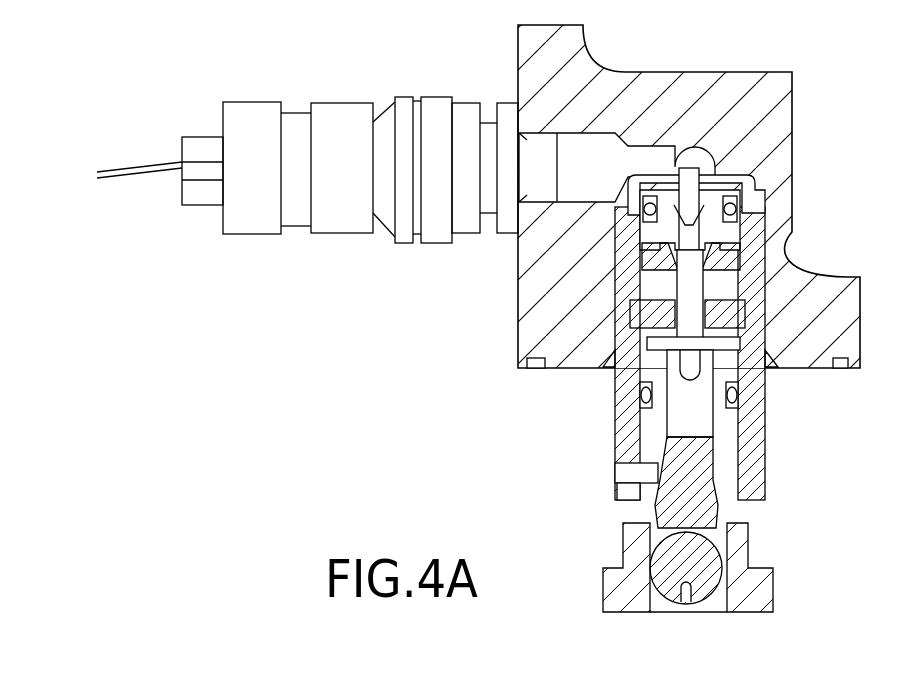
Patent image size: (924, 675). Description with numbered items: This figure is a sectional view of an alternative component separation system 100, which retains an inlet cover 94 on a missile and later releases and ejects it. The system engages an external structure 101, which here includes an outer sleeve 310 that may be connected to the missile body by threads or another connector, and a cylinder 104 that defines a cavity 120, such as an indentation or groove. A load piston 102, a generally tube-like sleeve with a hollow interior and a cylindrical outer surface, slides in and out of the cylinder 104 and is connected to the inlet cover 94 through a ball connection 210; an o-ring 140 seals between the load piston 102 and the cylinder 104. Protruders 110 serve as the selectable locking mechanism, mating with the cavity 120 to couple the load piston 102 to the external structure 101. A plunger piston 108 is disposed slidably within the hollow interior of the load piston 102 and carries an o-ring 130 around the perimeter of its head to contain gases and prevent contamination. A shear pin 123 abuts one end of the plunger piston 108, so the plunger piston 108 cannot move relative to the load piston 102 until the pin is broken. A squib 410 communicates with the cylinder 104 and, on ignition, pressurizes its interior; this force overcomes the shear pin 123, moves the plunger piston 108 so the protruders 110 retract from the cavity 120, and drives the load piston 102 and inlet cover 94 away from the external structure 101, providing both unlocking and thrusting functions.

The component separation system 100 is at (388, 307).
The external structure 101 is at (793, 125).
The load piston 102 is at (615, 441).
The cylinder 104 is at (615, 462).
The plunger piston 108 is at (693, 279).
The protruders 110 is at (733, 308).
The cavity 120 is at (635, 320).
The shear pin 123 is at (728, 347).
The o-ring 130 is at (765, 196).
The o-ring 140 is at (640, 398).
The ball connection 210 is at (695, 554).
The outer sleeve 310 is at (748, 467).
The squib 410 is at (333, 234).
The inlet cover 94 is at (757, 588).